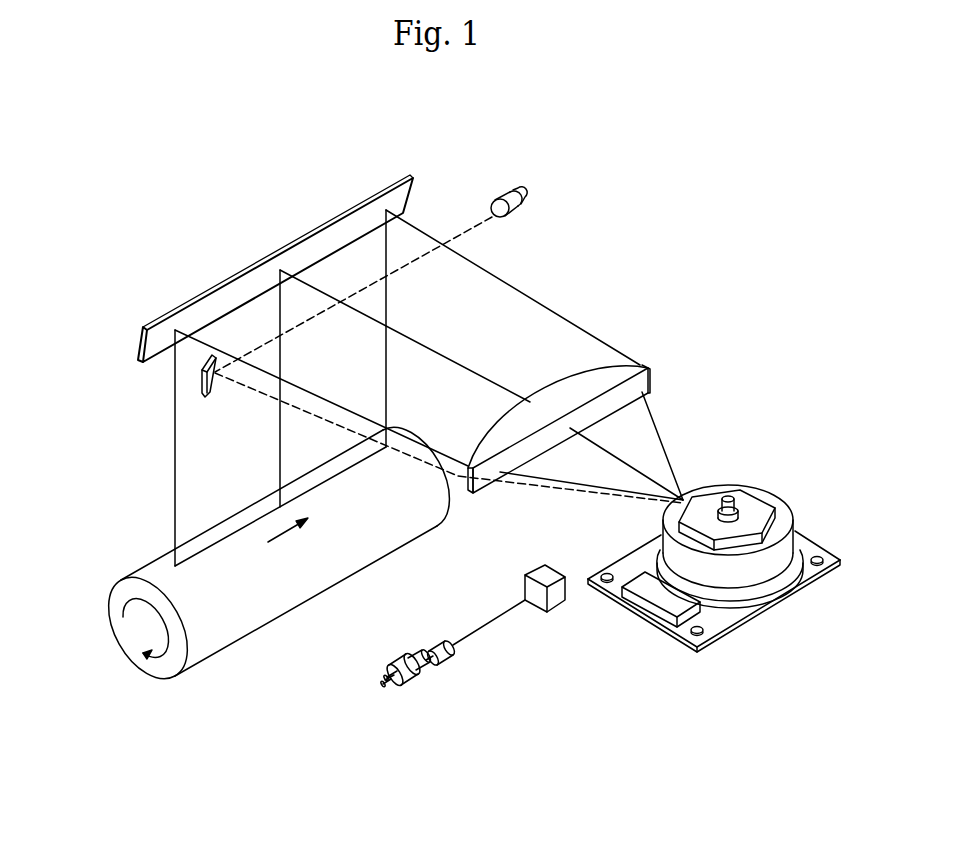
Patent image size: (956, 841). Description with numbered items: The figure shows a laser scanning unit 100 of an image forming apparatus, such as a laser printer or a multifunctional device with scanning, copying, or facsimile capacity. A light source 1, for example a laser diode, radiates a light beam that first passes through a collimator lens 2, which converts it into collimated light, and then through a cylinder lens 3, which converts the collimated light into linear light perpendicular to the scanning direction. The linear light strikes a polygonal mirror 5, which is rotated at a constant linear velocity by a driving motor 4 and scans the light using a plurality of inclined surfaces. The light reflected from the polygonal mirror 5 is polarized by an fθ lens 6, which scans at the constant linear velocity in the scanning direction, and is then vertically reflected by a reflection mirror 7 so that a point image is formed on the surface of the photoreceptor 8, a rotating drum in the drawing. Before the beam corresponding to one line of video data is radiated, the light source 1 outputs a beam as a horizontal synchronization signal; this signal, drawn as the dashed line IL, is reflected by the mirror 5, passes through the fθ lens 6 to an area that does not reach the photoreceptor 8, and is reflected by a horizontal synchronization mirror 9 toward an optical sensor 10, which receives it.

The laser scanning unit 100 is at (294, 788).
The light source 1 is at (418, 677).
The collimator lens 2 is at (450, 654).
The cylinder lens 3 is at (557, 593).
The driving motor 4 is at (783, 520).
The polygonal mirror 5 is at (752, 505).
The fθ lens 6 is at (641, 367).
The reflection mirror 7 is at (315, 248).
The photoreceptor 8 is at (125, 632).
The horizontal synchronization mirror 9 is at (197, 383).
The optical sensor 10 is at (521, 194).
The illumination light IL is at (462, 233).